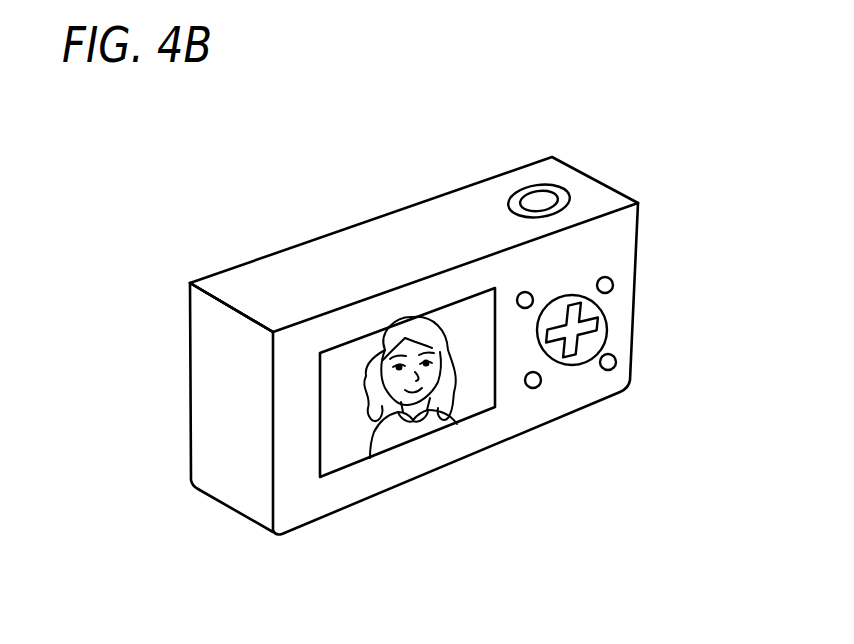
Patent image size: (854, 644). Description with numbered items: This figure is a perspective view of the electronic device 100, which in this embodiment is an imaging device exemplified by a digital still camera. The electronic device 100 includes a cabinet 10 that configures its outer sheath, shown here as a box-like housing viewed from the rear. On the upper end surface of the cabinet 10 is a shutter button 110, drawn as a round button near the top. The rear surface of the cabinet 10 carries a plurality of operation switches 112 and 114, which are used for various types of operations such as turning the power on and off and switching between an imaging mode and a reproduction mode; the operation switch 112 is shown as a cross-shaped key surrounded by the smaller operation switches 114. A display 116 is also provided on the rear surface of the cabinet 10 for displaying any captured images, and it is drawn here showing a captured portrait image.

The cabinet 10 is at (223, 265).
The electronic device 100 is at (387, 176).
The shutter button 110 is at (544, 197).
The operation switch 112 is at (562, 357).
The operation switches 114 is at (614, 360).
The display 116 is at (365, 462).